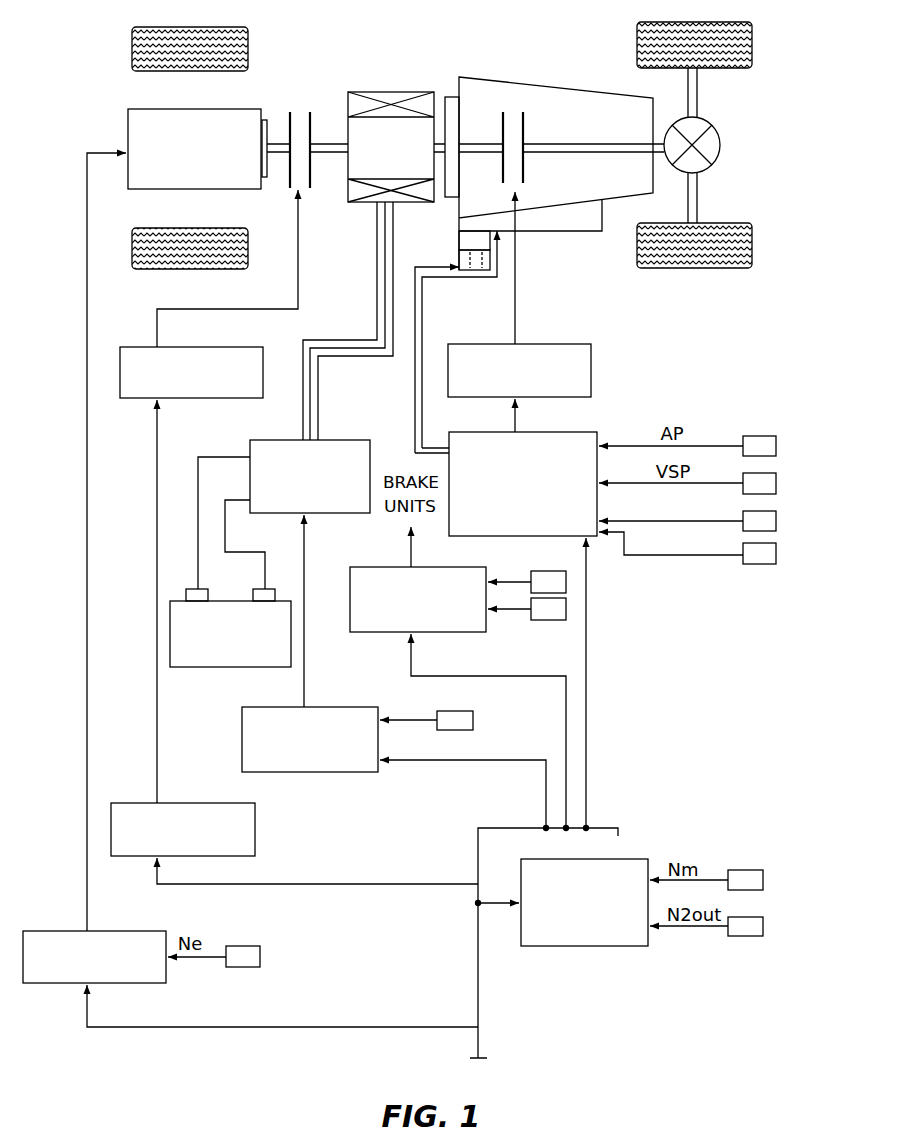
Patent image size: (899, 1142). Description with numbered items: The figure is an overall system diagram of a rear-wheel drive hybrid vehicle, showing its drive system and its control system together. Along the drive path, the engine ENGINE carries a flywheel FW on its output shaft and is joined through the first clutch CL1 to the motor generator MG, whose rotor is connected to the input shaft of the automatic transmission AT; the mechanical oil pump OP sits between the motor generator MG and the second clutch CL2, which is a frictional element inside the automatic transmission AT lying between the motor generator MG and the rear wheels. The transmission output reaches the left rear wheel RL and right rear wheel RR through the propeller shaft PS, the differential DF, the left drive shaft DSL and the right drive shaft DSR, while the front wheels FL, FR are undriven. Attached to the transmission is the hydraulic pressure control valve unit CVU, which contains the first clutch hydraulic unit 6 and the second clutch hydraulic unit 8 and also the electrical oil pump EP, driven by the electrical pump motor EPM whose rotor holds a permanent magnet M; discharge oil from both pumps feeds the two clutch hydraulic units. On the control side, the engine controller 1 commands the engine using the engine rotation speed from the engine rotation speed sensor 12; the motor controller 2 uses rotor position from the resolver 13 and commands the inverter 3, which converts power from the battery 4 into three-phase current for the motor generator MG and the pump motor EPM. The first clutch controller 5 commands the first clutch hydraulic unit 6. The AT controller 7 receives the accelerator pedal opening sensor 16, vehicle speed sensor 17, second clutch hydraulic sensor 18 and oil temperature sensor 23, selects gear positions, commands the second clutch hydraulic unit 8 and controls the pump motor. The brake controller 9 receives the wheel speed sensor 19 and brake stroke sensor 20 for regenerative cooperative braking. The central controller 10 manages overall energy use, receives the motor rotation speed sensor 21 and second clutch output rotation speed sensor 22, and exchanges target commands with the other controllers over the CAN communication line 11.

The engine controller 1 is at (126, 931).
The motor controller 2 is at (350, 706).
The inverter 3 is at (356, 440).
The battery 4 is at (222, 600).
The first clutch controller 5 is at (128, 803).
The first clutch hydraulic unit 6 is at (136, 347).
The AT controller 7 is at (553, 432).
The second clutch hydraulic unit 8 is at (487, 344).
The brake controller 9 is at (368, 567).
The central controller 10 is at (642, 859).
The CAN communication line 11 is at (478, 845).
The engine rotation speed sensor 12 is at (261, 957).
The resolver 13 is at (474, 720).
The accelerator pedal opening sensor 16 is at (777, 446).
The vehicle speed sensor 17 is at (777, 483).
The second clutch hydraulic sensor 18 is at (777, 521).
The wheel speed sensor 19 is at (548, 571).
The brake stroke sensor 20 is at (548, 620).
The motor rotation speed sensor 21 is at (764, 880).
The second clutch output rotation speed sensor 22 is at (764, 926).
The oil temperature sensor 23 is at (777, 555).
The engine ENGINE is at (194, 149).
The flywheel FW is at (266, 120).
The first clutch CL1 is at (300, 133).
The motor generator MG is at (391, 131).
The mechanical oil pump OP is at (452, 97).
The automatic transmission AT is at (560, 85).
The second clutch CL2 is at (516, 133).
The hydraulic pressure control valve unit CVU is at (553, 232).
The propeller shaft PS is at (662, 152).
The electrical oil pump EP is at (459, 239).
The electrical pump motor EPM is at (459, 258).
The permanent magnet M is at (490, 265).
The differential DF is at (720, 140).
The right drive shaft DSR is at (697, 87).
The left drive shaft DSL is at (697, 193).
The front right wheel FR is at (132, 31).
The front left wheel FL is at (132, 257).
The right rear wheel RR is at (752, 40).
The left rear wheel RL is at (752, 247).